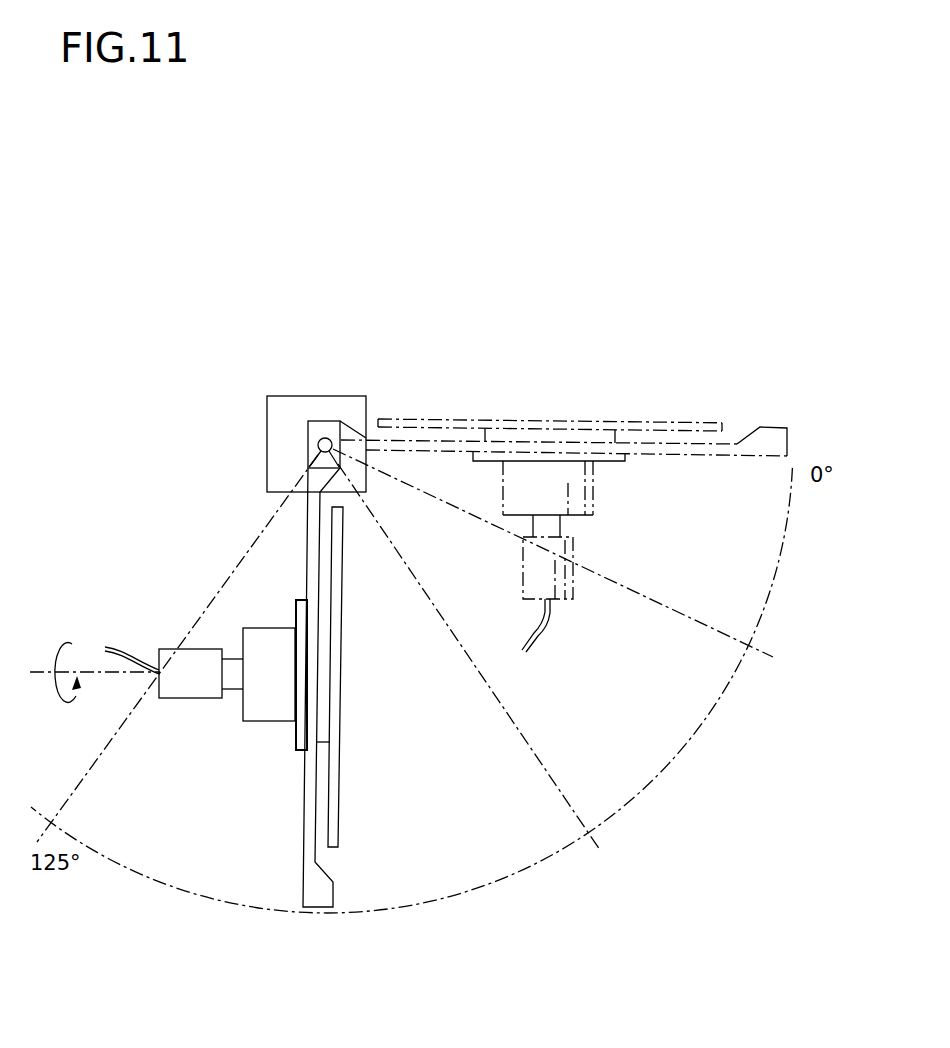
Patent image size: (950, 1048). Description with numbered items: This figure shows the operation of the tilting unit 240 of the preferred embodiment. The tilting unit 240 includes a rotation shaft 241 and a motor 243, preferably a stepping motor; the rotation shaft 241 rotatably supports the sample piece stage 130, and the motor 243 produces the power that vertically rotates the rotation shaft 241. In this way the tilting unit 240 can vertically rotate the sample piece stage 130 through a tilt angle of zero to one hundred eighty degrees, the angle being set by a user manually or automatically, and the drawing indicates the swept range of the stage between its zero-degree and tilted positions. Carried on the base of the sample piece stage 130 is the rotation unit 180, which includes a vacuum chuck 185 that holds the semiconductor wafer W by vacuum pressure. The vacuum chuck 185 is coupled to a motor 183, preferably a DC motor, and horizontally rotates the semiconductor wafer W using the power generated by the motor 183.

The tilting unit 240 is at (285, 401).
The motor 243 is at (347, 400).
The rotation shaft 241 is at (318, 447).
The sample piece stage 130 is at (322, 892).
The semiconductor wafer W is at (335, 785).
The vacuum chuck 185 is at (325, 753).
The rotation unit 180 is at (240, 746).
The motor 183 is at (177, 693).